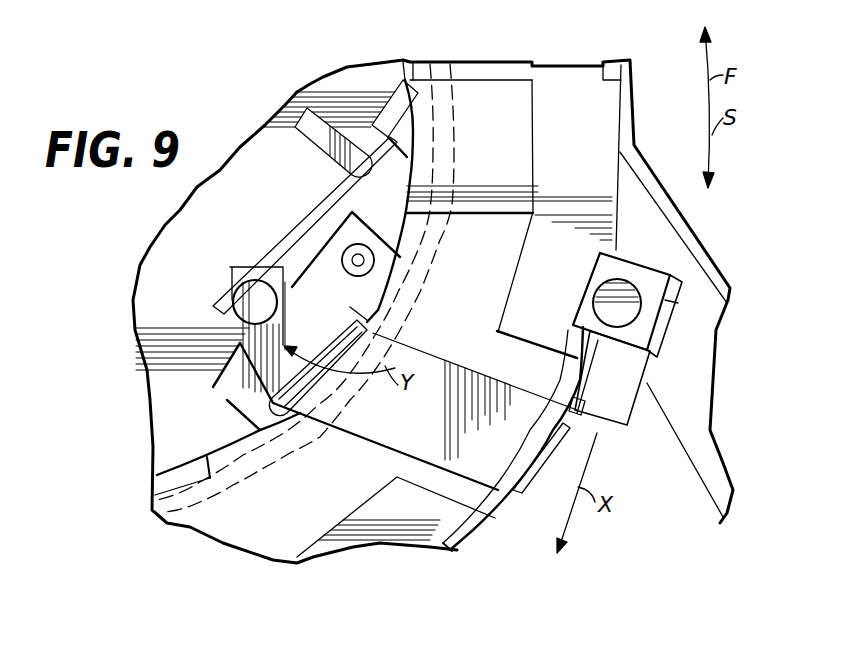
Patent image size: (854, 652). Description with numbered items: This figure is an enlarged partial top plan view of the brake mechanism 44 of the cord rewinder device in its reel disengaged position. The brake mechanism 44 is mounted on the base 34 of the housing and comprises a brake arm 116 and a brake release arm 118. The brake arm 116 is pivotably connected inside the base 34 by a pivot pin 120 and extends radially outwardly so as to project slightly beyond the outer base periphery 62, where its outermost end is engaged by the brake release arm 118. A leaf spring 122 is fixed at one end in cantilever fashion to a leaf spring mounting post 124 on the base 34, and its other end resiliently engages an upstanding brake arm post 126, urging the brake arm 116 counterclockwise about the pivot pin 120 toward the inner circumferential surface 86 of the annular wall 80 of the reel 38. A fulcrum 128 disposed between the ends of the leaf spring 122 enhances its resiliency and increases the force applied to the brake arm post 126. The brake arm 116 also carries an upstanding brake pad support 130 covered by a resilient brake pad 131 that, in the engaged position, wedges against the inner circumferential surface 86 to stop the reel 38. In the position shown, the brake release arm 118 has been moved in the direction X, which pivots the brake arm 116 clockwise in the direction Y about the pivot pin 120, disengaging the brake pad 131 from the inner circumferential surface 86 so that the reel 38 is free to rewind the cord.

The base 34 is at (633, 105).
The reel 38 is at (447, 175).
The brake mechanism 44 is at (234, 344).
The outer base periphery 62 is at (470, 535).
The annular wall 80 is at (150, 516).
The inner circumferential surface 86 is at (209, 452).
The brake arm 116 is at (368, 420).
The brake release arm 118 is at (615, 387).
The pivot pin 120 is at (353, 262).
The leaf spring 122 is at (327, 197).
The leaf spring mounting post 124 is at (388, 97).
The brake arm post 126 is at (255, 303).
The fulcrum 128 is at (298, 98).
The brake pad support 130 is at (372, 334).
The brake pad 131 is at (330, 345).